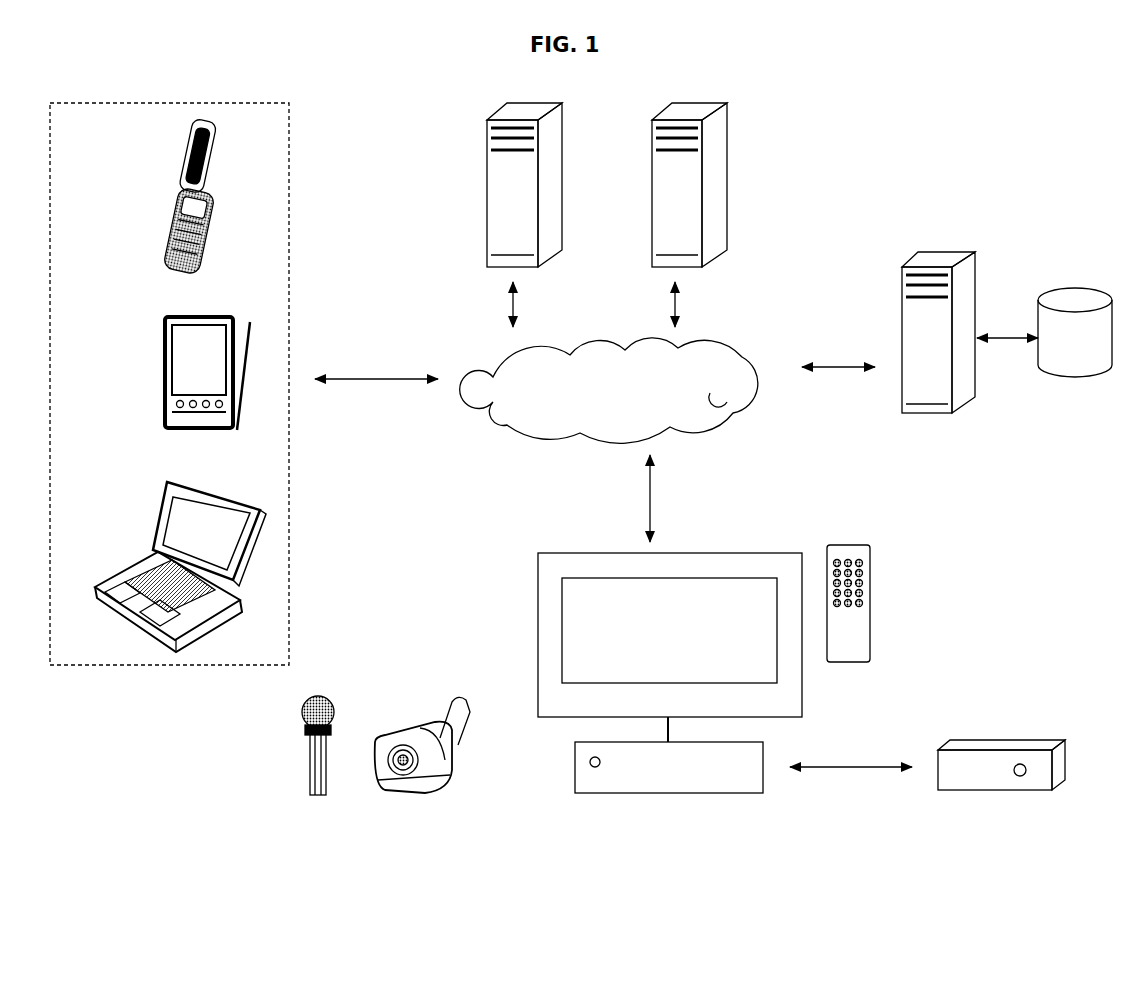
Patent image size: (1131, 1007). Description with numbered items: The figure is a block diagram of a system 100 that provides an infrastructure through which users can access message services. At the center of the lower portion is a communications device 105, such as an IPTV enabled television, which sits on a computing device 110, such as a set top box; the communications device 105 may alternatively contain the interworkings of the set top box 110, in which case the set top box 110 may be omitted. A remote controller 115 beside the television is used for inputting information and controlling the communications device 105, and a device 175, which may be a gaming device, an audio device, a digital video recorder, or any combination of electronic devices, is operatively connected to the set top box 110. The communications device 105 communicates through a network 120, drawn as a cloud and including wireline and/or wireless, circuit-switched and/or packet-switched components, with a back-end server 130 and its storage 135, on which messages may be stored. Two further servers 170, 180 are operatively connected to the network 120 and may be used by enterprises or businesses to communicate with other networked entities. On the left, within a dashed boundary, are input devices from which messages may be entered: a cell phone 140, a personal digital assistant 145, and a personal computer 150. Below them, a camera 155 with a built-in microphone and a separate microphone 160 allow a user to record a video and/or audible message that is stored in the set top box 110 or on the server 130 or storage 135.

The system 100 is at (208, 354).
The communications device 105 is at (773, 669).
The set top box 110 is at (748, 781).
The remote controller 115 is at (877, 605).
The network 120 is at (698, 404).
The server 130 is at (938, 332).
The storage 135 is at (1097, 368).
The cell phone 140 is at (167, 225).
The personal digital assistant 145 is at (163, 392).
The personal computer 150 is at (140, 563).
The camera 155 is at (467, 757).
The microphone 160 is at (300, 768).
The server 170 is at (524, 185).
The device 175 is at (1000, 783).
The server 180 is at (689, 185).